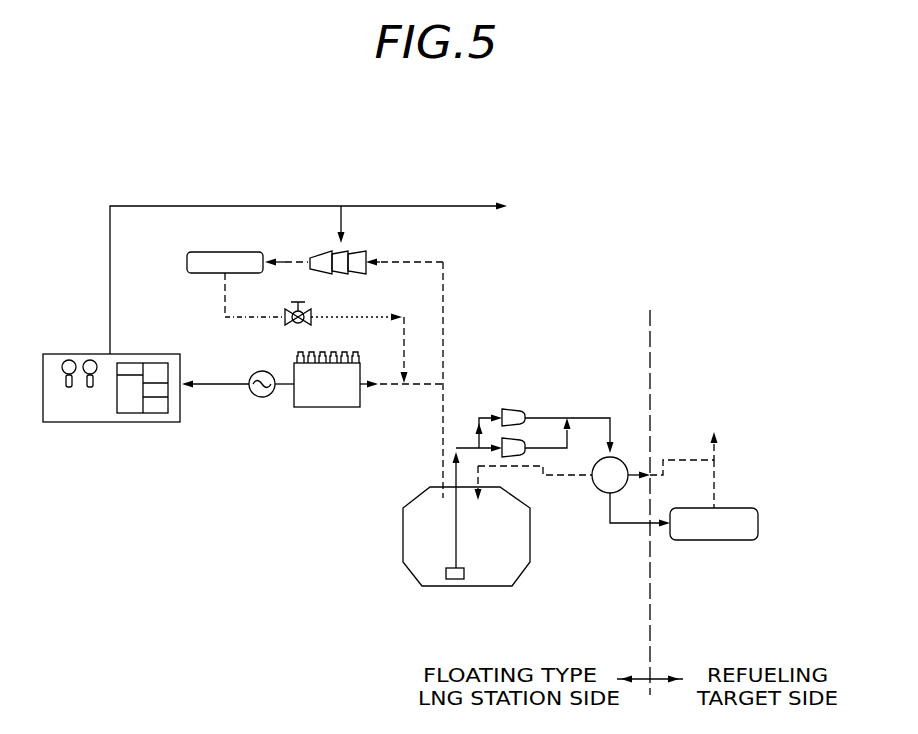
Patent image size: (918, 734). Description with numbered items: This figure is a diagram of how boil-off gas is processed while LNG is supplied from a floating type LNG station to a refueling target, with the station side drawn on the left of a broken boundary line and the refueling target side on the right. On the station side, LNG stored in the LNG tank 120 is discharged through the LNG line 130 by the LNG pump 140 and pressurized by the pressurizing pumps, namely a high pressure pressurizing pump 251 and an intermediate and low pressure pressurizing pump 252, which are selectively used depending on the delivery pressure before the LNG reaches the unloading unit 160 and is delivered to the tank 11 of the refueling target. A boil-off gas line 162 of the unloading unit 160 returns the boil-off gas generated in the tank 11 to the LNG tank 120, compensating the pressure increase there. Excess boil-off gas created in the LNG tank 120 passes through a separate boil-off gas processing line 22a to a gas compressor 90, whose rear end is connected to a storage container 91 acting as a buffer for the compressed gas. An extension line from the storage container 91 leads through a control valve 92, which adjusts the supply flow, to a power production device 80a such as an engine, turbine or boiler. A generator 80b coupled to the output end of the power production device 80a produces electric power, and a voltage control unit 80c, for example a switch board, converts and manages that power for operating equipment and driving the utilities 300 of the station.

The tank 11 is at (737, 540).
The boil-off gas processing line 22a is at (443, 290).
The power production device 80a is at (343, 407).
The generator 80b is at (263, 397).
The voltage control unit 80c is at (147, 422).
The gas compressor 90 is at (356, 251).
The storage container 91 is at (245, 252).
The control valve 92 is at (293, 325).
The LNG tank 120 is at (427, 540).
The LNG line 130 is at (455, 471).
The LNG pump 140 is at (456, 580).
The unloading unit 160 is at (628, 454).
The boil-off gas line 162 is at (532, 468).
The high pressure pressurizing pump 251 is at (520, 438).
The intermediate and low pressure pressurizing pump 252 is at (505, 409).
The utilities 300 is at (548, 218).